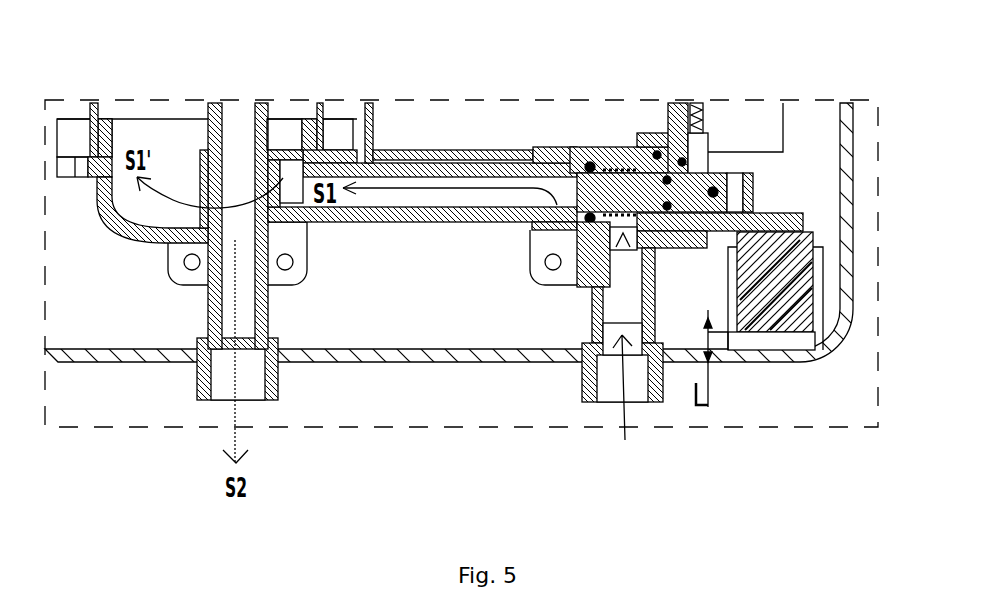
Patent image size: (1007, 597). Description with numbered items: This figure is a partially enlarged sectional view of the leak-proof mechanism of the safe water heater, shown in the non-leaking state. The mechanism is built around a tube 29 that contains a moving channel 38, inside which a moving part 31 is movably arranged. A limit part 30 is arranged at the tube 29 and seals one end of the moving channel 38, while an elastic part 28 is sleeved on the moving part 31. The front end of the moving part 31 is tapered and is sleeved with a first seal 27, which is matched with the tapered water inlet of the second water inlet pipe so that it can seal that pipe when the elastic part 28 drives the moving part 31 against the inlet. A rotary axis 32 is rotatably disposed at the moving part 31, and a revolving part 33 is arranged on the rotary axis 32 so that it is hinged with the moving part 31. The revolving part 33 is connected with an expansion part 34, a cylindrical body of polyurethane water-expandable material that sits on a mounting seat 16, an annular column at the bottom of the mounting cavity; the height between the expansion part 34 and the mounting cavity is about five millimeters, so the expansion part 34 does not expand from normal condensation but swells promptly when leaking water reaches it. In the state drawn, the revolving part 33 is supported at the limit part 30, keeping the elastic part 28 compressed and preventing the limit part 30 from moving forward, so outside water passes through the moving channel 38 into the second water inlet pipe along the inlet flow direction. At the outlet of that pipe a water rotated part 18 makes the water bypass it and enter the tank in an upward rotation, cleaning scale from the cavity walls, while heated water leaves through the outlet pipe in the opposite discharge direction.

The mounting seat 16 is at (820, 277).
The water rotated part 18 is at (282, 152).
The first seal 27 is at (590, 163).
The elastic part 28 is at (614, 170).
The tube 29 is at (630, 148).
The limit part 30 is at (700, 108).
The moving part 31 is at (690, 185).
The rotary axis 32 is at (733, 180).
The revolving part 33 is at (792, 214).
The expansion part 34 is at (777, 303).
The moving channel 38 is at (612, 240).